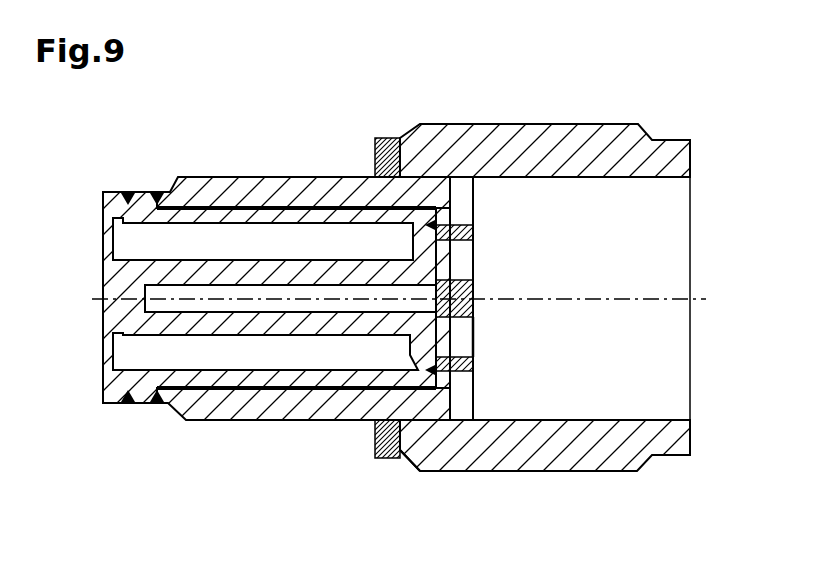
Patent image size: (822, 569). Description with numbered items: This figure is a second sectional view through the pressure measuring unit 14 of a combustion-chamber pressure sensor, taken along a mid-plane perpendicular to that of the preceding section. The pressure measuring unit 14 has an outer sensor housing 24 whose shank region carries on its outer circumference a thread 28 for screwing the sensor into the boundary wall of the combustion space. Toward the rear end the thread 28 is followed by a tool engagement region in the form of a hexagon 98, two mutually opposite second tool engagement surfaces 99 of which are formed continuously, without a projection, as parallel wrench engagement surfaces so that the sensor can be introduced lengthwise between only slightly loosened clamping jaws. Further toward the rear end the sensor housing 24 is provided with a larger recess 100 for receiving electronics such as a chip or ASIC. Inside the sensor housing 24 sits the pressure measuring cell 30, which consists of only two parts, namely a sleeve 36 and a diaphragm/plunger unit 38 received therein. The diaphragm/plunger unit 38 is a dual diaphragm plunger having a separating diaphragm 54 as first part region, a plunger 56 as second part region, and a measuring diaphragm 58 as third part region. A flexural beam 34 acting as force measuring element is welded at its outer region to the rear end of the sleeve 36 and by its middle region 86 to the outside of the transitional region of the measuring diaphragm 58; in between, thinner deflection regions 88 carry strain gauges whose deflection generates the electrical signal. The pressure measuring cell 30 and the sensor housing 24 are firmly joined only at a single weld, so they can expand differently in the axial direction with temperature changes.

The pressure measuring unit 14 is at (536, 491).
The sensor housing 24 is at (462, 448).
The thread 28 is at (315, 177).
The pressure measuring cell 30 is at (226, 197).
The flexural beam 34 is at (475, 318).
The sleeve 36 is at (173, 385).
The diaphragm/plunger unit 38 is at (226, 341).
The separating diaphragm 54 is at (103, 360).
The plunger 56 is at (308, 325).
The measuring diaphragm 58 is at (477, 337).
The middle region 86 is at (475, 285).
The deflection regions 88 is at (473, 220).
The hexagon 98 is at (520, 148).
The second tool engagement surfaces 99 is at (507, 112).
The recess 100 is at (657, 262).